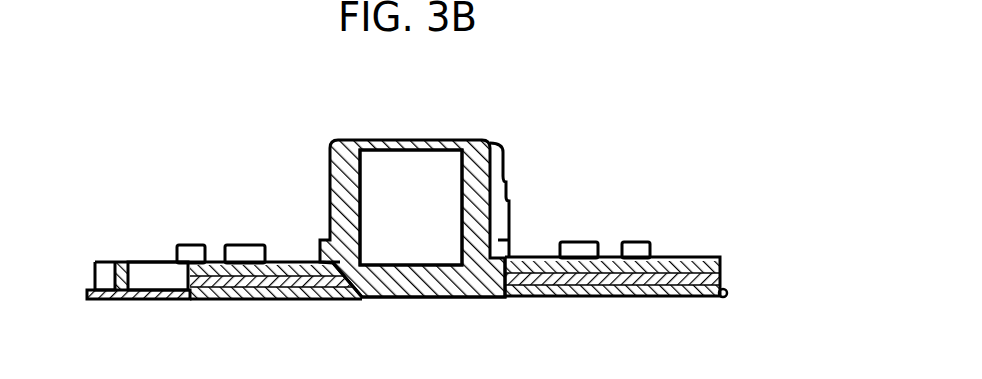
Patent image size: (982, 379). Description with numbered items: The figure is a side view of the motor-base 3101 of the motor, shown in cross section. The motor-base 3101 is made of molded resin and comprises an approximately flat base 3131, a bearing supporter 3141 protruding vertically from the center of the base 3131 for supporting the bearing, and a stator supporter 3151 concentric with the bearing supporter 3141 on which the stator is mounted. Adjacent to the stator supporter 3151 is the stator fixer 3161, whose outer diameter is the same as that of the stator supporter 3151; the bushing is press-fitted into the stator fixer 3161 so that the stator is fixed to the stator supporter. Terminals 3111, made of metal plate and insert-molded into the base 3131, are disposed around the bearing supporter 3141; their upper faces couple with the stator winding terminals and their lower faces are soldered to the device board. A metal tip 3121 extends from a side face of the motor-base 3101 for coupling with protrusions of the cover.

The motor-base 3101 is at (619, 63).
The terminals 3111 is at (158, 295).
The metal tip 3121 is at (719, 294).
The base 3131 is at (506, 260).
The bearing supporter 3141 is at (360, 171).
The stator supporter 3151 is at (514, 212).
The stator fixer 3161 is at (502, 167).